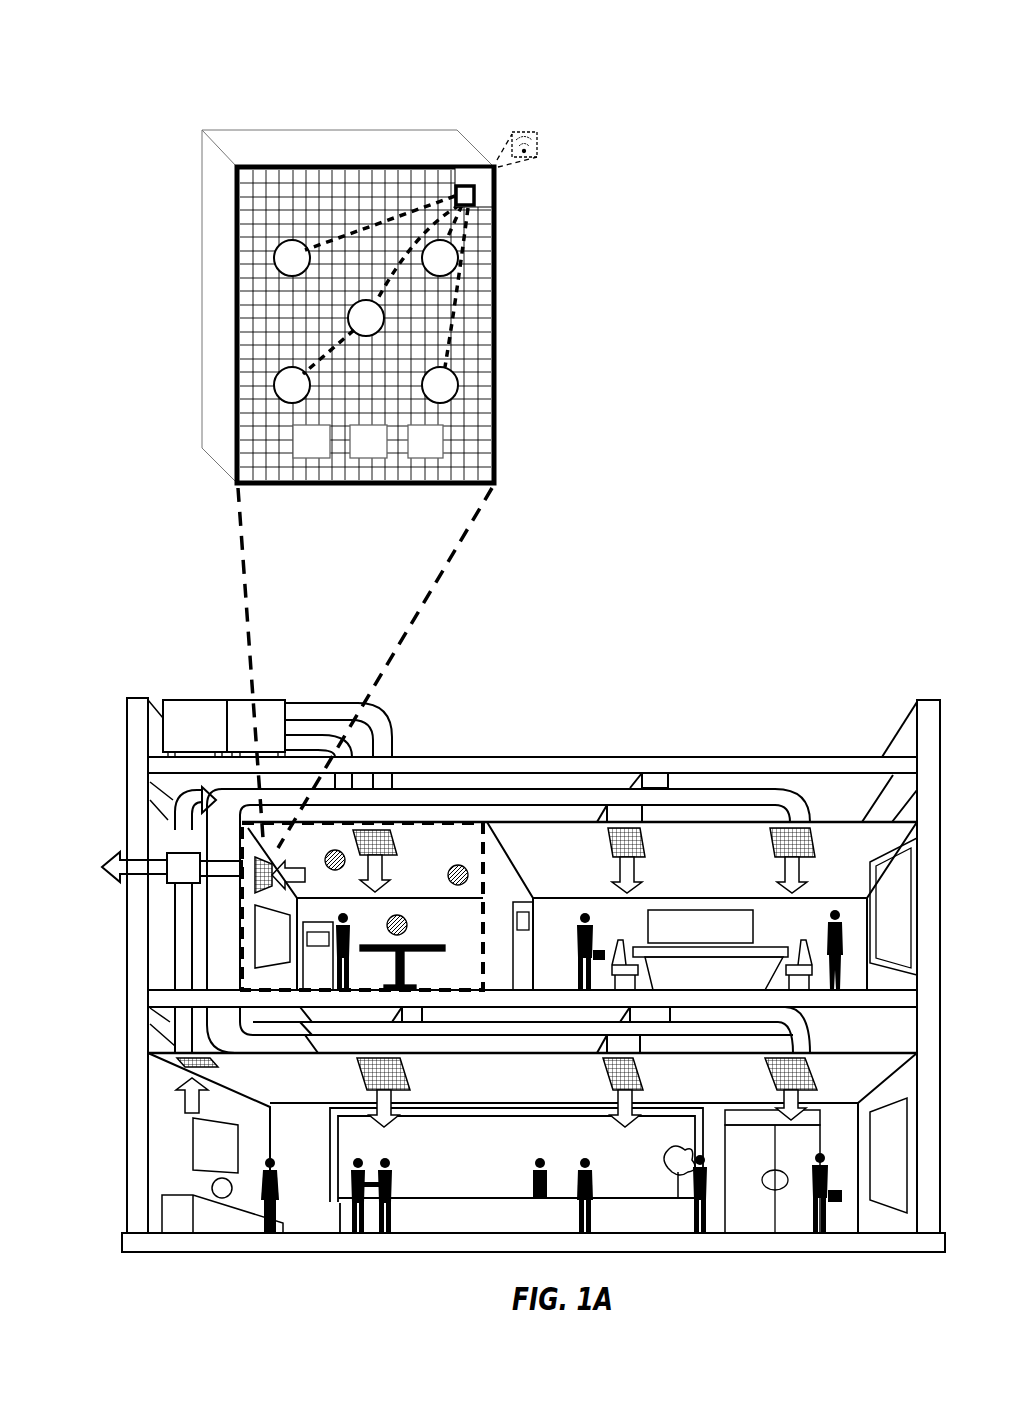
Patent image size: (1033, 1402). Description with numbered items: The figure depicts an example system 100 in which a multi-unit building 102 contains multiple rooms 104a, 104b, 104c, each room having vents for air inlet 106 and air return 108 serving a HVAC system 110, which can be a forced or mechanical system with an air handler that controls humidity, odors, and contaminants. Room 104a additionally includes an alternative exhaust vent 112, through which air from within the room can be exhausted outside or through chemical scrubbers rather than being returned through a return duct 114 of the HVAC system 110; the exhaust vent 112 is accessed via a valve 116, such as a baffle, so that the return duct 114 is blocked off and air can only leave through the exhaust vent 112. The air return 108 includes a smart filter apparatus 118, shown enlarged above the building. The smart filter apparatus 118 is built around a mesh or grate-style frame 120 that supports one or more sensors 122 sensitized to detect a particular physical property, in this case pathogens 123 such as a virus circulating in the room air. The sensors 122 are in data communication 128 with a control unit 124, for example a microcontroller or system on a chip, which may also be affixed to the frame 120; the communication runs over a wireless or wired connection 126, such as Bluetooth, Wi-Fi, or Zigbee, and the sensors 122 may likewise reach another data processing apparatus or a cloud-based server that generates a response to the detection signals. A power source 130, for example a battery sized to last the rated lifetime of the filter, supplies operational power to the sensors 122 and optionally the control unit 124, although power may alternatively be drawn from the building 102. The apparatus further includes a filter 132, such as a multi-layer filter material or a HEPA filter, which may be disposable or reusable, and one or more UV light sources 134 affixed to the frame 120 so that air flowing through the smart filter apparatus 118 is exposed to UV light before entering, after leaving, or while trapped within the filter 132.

The system 100 is at (132, 136).
The multi-unit building 102 is at (797, 757).
The room 104a is at (448, 840).
The room 104b is at (700, 876).
The room 104c is at (172, 1153).
The air inlet 106 is at (383, 828).
The air return 108 is at (218, 1065).
The HVAC system 110 is at (215, 727).
The exhaust vent 112 is at (120, 876).
The return duct 114 is at (187, 812).
The valve 116 is at (167, 855).
The smart filter apparatus 118 is at (285, 123).
The frame 120 is at (494, 352).
The sensors 122 is at (292, 385).
The pathogens 123 is at (408, 922).
The control unit 124 is at (496, 187).
The wireless or wired connection 126 is at (537, 132).
The data communication 128 is at (494, 242).
The power source 130 is at (466, 190).
The filter 132 is at (331, 150).
The UV light source 134 is at (320, 465).